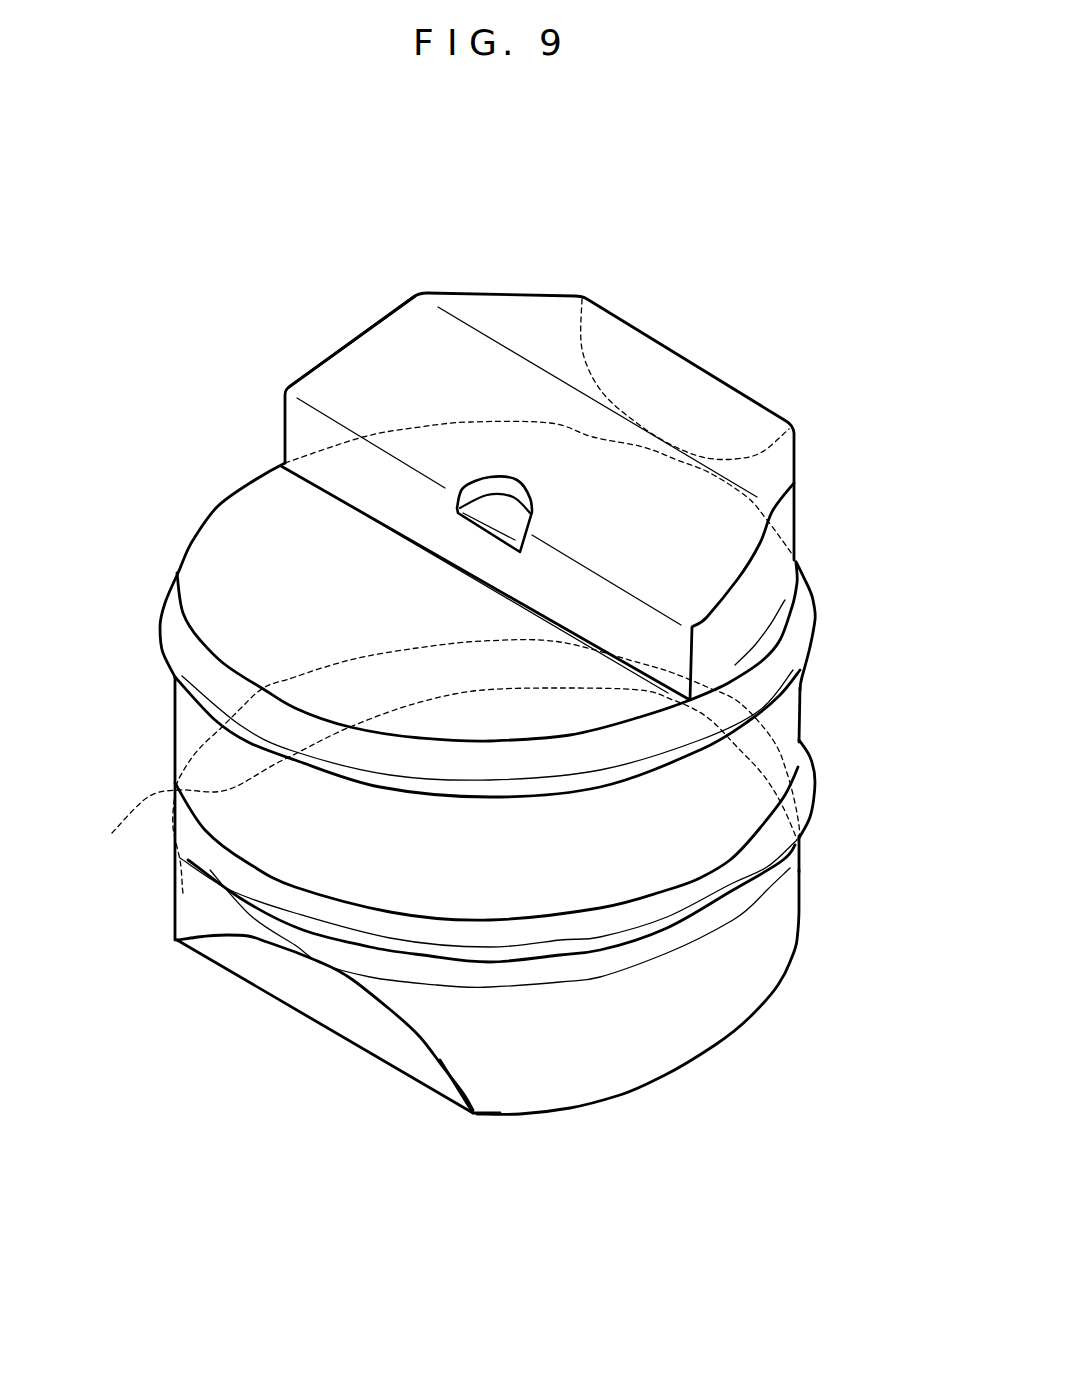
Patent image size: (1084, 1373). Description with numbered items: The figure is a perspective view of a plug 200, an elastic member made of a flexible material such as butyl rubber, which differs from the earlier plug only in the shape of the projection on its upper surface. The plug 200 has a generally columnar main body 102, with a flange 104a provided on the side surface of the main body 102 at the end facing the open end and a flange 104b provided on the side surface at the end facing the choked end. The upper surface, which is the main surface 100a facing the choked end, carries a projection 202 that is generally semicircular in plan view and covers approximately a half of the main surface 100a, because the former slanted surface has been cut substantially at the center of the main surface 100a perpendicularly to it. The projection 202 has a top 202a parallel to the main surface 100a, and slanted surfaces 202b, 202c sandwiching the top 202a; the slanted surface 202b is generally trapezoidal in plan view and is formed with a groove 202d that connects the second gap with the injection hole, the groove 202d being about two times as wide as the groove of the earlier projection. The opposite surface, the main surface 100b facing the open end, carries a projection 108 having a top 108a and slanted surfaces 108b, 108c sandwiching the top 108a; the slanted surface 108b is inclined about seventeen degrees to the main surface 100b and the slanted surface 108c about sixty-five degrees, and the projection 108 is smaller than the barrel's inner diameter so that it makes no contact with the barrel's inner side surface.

The plug 200 is at (266, 390).
The projection 202 is at (763, 557).
The top 202a is at (515, 313).
The slanted surface 202b is at (392, 377).
The slanted surface 202c is at (675, 377).
The groove 202d is at (490, 478).
The main surface 100a is at (238, 568).
The main surface 100b is at (238, 710).
The flange 104a is at (710, 887).
The flange 104b is at (788, 661).
The projection 108 is at (698, 1020).
The top 108a is at (475, 1115).
The slanted surface 108b is at (434, 782).
The slanted surface 108c is at (352, 1032).
The main body 102 is at (575, 887).